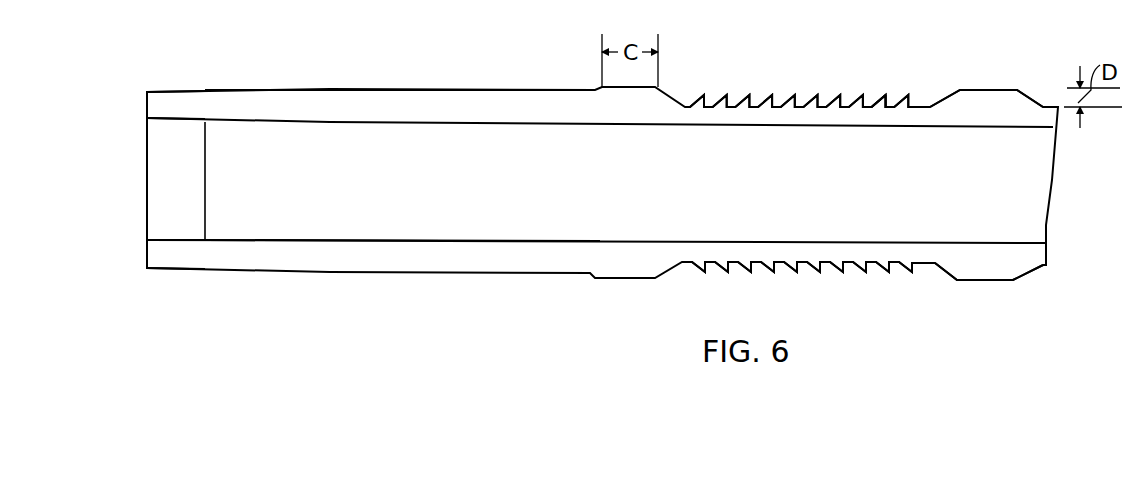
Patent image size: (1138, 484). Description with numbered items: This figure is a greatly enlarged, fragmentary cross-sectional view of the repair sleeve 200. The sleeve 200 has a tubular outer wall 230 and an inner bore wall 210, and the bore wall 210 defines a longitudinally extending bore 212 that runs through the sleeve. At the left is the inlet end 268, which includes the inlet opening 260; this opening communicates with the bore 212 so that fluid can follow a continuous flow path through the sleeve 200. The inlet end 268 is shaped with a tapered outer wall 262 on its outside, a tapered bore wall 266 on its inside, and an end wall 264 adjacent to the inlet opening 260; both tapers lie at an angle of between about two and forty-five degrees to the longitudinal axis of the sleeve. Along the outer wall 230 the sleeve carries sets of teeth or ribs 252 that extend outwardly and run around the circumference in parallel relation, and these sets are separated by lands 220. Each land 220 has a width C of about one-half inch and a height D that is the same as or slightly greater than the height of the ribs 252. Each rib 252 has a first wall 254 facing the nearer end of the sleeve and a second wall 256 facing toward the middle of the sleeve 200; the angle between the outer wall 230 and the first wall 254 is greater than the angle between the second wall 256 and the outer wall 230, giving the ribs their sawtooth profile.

The sleeve 200 is at (500, 282).
The bore wall 210 is at (375, 240).
The bore 212 is at (598, 190).
The lands 220 is at (1003, 88).
The outer wall 230 is at (555, 90).
The ribs 252 is at (770, 88).
The first wall 254 is at (877, 97).
The second wall 256 is at (895, 106).
The inlet opening 260 is at (143, 200).
The tapered outer wall 262 is at (177, 90).
The end wall 264 is at (145, 102).
The tapered bore wall 266 is at (143, 225).
The inlet end 268 is at (362, 72).